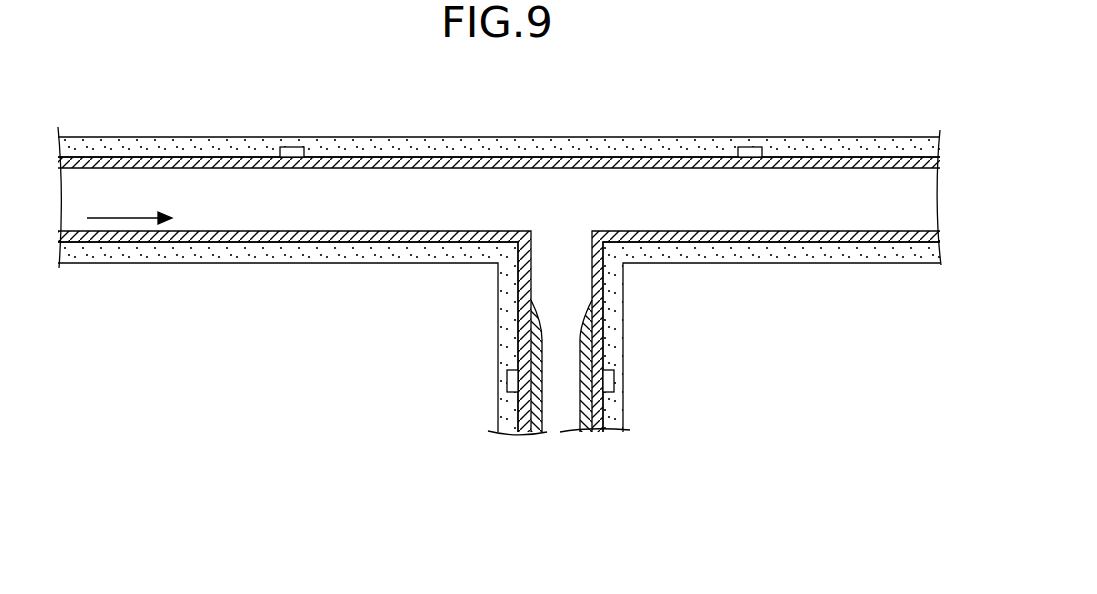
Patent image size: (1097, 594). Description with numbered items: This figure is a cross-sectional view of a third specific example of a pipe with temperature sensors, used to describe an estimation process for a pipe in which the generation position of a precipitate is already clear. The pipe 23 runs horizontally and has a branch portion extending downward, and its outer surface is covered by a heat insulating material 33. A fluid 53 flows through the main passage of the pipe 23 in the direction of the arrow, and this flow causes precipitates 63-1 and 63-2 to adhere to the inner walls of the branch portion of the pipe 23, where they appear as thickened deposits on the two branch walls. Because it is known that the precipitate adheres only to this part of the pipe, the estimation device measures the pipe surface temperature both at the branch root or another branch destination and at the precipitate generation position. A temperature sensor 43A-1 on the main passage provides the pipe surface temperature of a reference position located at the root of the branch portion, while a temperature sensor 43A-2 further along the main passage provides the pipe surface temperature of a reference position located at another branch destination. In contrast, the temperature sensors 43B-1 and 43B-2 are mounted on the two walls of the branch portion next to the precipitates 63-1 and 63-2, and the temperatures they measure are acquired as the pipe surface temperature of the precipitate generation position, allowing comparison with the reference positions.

The pipe 23 is at (620, 233).
The heat insulating material 33 is at (370, 252).
The temperature sensor 43A-1 is at (293, 146).
The temperature sensor 43A-2 is at (751, 146).
The temperature sensor 43B-1 is at (507, 378).
The temperature sensor 43B-2 is at (614, 378).
The fluid 53 is at (131, 217).
The precipitate 63-1 is at (537, 426).
The precipitate 63-2 is at (585, 417).